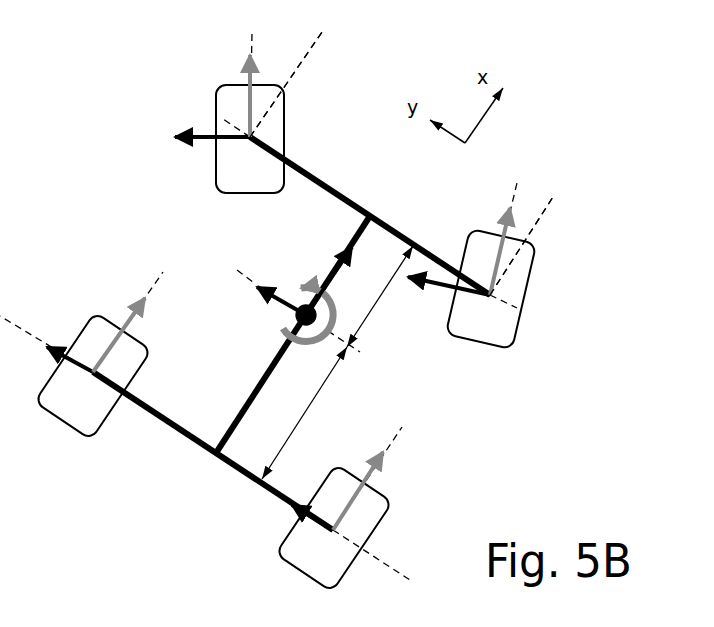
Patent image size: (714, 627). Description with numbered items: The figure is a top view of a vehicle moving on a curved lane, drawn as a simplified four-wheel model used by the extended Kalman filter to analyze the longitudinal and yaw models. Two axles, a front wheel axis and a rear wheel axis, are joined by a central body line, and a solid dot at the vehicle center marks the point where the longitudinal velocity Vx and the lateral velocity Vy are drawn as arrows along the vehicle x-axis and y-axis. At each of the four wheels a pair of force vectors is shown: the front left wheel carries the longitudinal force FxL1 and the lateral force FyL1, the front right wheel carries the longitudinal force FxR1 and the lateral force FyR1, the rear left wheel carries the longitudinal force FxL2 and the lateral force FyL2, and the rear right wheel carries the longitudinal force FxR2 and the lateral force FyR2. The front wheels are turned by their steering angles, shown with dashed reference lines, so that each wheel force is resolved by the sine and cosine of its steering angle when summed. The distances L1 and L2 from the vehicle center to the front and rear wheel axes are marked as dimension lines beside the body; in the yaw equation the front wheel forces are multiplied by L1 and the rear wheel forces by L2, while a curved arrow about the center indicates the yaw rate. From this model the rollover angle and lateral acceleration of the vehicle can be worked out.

The front left wheel longitudinal force FxL1 is at (220, 88).
The front left wheel lateral force FyL1 is at (196, 120).
The front right wheel longitudinal force FxR1 is at (478, 246).
The front right wheel lateral force FyR1 is at (441, 300).
The rear left wheel longitudinal force FxL2 is at (119, 317).
The rear left wheel lateral force FyL2 is at (59, 340).
The rear right wheel longitudinal force FxR2 is at (384, 487).
The rear right wheel lateral force FyR2 is at (281, 515).
The longitudinal vehicle velocity Vx is at (329, 267).
The lateral vehicle velocity Vy is at (266, 302).
The front axle distance L1 is at (380, 296).
The rear axle distance L2 is at (304, 413).